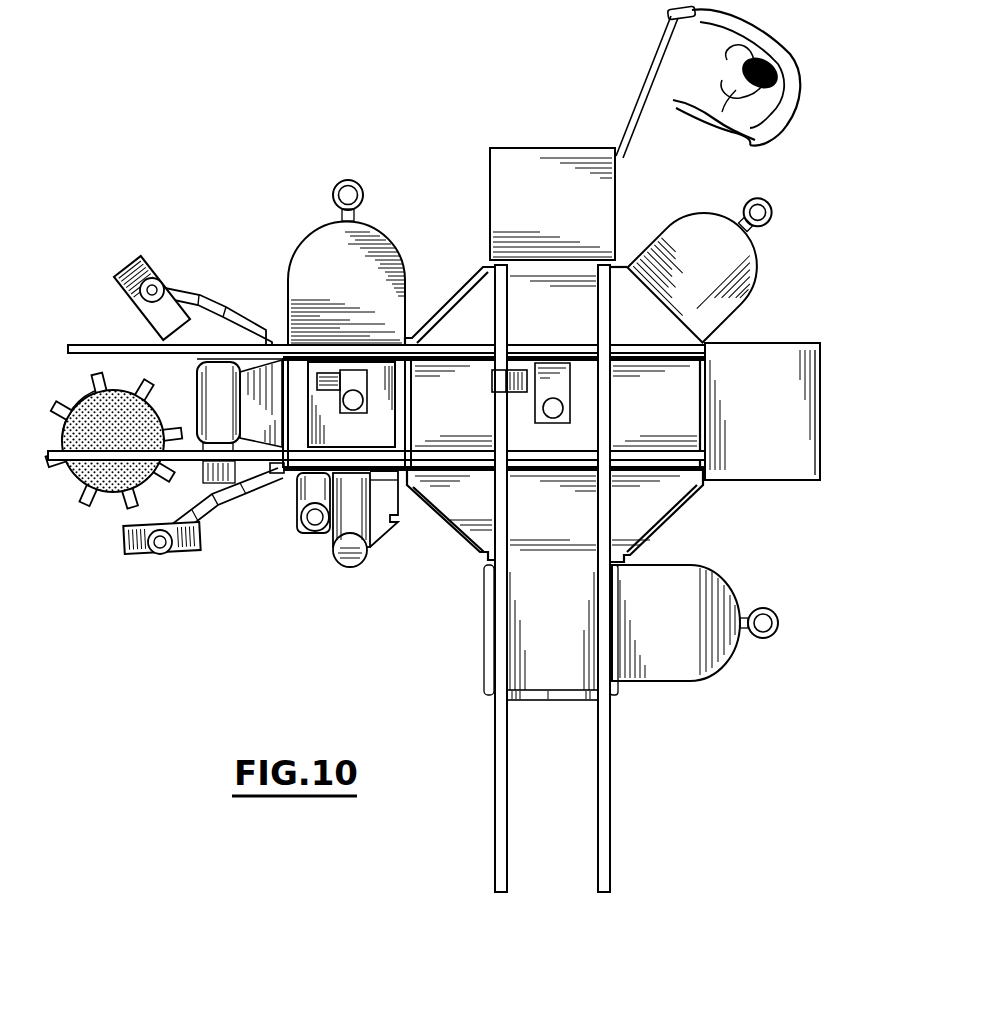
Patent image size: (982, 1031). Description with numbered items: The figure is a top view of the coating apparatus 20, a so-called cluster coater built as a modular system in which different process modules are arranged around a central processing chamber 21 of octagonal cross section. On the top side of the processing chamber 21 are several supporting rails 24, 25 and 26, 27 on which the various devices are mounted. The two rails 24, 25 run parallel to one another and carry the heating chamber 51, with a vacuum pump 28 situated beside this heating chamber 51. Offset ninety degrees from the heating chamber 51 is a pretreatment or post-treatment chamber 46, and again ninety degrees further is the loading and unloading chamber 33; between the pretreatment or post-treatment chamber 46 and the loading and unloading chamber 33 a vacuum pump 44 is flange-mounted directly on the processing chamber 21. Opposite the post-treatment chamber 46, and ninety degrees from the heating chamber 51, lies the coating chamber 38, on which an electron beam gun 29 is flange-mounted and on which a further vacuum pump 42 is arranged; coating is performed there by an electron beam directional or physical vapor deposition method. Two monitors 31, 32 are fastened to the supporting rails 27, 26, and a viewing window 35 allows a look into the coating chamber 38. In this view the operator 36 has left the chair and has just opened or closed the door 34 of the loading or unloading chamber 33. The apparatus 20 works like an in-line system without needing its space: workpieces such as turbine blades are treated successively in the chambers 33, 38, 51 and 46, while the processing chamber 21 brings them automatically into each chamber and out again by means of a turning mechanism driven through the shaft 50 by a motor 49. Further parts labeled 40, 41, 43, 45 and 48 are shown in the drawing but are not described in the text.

The coating apparatus 20 is at (832, 253).
The processing chamber 21 is at (683, 518).
The supporting rail 24 is at (495, 806).
The supporting rail 25 is at (607, 805).
The supporting rail 26 is at (90, 345).
The supporting rail 27 is at (77, 478).
The vacuum pump 28 is at (665, 683).
The electron beam gun 29 is at (349, 568).
The monitor 31 is at (182, 560).
The monitor 32 is at (142, 265).
The loading and unloading chamber 33 is at (525, 158).
The door 34 is at (655, 72).
The viewing window 35 is at (212, 380).
The operator 36 is at (795, 92).
The coating chamber 38 is at (352, 428).
The upper arm 40 is at (238, 313).
The lower arm 41 is at (236, 490).
The vacuum pump 42 is at (380, 238).
The ring 43 is at (348, 180).
The vacuum pump 44 is at (752, 288).
The ring 45 is at (770, 204).
The pretreatment or post-treatment chamber 46 is at (812, 402).
The ring 48 is at (779, 622).
The motor 49 is at (518, 368).
The shaft 50 is at (573, 416).
The heating chamber 51 is at (553, 700).